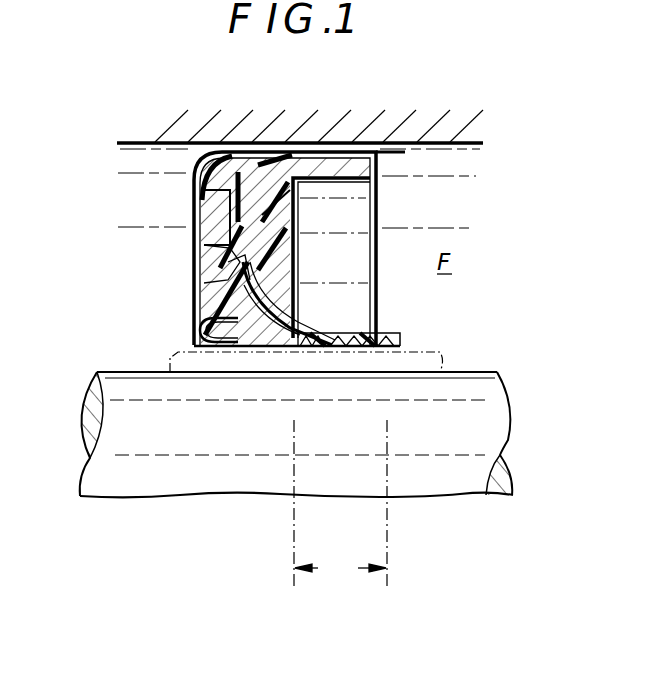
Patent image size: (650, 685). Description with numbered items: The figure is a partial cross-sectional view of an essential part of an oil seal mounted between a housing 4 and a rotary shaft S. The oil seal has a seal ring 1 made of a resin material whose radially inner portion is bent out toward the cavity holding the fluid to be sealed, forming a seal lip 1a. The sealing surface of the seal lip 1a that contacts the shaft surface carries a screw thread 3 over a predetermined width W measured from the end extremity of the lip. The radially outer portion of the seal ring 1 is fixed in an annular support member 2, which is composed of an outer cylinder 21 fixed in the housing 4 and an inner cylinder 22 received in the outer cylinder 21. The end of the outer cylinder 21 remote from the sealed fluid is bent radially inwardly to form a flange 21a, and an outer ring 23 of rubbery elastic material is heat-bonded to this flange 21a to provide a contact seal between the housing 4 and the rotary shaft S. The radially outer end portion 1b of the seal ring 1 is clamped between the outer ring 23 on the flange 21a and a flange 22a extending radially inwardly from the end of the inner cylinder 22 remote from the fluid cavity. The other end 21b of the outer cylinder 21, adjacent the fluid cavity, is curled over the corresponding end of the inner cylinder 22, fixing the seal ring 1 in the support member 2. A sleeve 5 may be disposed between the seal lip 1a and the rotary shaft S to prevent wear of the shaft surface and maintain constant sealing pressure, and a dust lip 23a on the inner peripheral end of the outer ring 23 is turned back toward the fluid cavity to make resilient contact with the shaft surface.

The seal ring 1 is at (262, 345).
The seal lip 1a is at (298, 325).
The radially outer end portion 1b is at (228, 255).
The annular support member 2 is at (275, 138).
The outer cylinder 21 is at (327, 150).
The flange 21a is at (206, 191).
The other end of the outer cylinder 21b is at (408, 152).
The inner cylinder 22 is at (328, 150).
The flange 22a is at (268, 218).
The outer ring 23 is at (202, 248).
The dust lip 23a is at (200, 333).
The screw thread 3 is at (336, 350).
The housing 4 is at (425, 147).
The sleeve 5 is at (440, 350).
The rotary shaft S is at (97, 370).
The predetermined width W is at (340, 505).